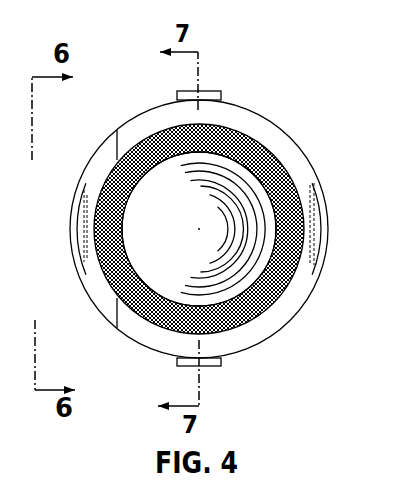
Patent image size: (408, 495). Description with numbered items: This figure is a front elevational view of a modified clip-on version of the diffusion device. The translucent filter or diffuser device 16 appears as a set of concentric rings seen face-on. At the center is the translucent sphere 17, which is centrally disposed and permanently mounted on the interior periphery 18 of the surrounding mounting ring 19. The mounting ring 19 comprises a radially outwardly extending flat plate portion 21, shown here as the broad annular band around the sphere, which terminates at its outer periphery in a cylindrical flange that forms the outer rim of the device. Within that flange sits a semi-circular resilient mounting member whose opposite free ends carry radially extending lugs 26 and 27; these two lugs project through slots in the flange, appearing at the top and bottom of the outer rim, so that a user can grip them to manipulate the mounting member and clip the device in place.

The translucent filter or diffuser device 16 is at (255, 103).
The translucent sphere 17 is at (253, 222).
The interior periphery 18 is at (262, 194).
The mounting ring 19 is at (280, 133).
The flat plate portion 21 is at (286, 260).
The lug 26 is at (207, 98).
The lug 27 is at (215, 365).